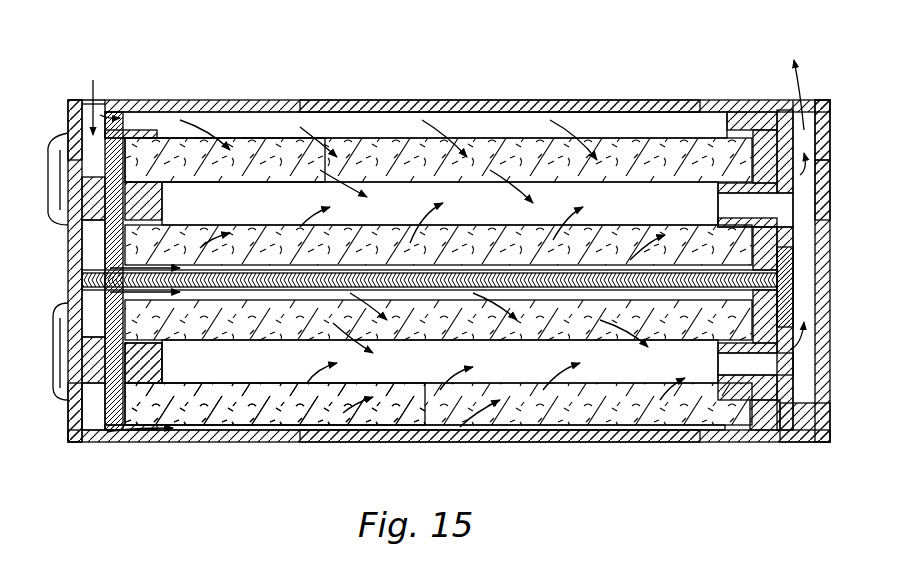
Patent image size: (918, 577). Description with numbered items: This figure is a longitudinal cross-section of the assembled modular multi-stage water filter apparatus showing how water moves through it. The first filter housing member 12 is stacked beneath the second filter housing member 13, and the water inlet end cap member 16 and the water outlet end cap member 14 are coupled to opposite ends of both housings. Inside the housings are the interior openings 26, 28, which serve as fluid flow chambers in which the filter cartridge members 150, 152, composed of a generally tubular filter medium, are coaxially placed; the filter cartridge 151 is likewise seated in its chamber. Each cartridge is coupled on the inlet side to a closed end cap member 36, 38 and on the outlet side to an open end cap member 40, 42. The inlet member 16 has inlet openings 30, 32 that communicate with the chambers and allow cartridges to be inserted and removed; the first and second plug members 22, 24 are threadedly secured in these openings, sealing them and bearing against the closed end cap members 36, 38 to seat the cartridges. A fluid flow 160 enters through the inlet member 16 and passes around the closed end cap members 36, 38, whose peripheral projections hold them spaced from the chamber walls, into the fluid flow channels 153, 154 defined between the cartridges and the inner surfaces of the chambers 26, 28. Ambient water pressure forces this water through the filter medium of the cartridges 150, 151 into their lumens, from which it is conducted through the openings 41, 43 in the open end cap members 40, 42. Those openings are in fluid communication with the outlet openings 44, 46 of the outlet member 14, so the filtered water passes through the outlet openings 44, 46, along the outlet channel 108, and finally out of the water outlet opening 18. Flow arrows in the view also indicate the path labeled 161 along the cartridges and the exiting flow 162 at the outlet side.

The first filter housing member 12 is at (718, 442).
The second filter housing member 13 is at (682, 100).
The water outlet end cap member 14 is at (830, 190).
The water inlet end cap member 16 is at (78, 100).
The water outlet opening 18 is at (813, 103).
The first plug member 22 is at (68, 118).
The second plug member 24 is at (68, 440).
The interior opening 26 is at (500, 432).
The interior opening 28 is at (398, 128).
The inlet opening 30 is at (72, 175).
The inlet opening 32 is at (84, 442).
The closed end cap member 36 is at (150, 130).
The closed end cap member 38 is at (167, 383).
The open end cap member 40 is at (770, 137).
The opening 41 is at (797, 163).
The open end cap member 42 is at (770, 427).
The opening 43 is at (793, 362).
The outlet opening 44 is at (800, 210).
The outlet opening 46 is at (813, 390).
The outlet channel 108 is at (800, 304).
The filter cartridge member 150 is at (600, 420).
The filter cartridge 151 is at (438, 404).
The filter cartridge member 152 is at (522, 150).
The fluid flow channel 153 is at (253, 127).
The fluid flow channel 154 is at (298, 430).
The fluid flow 160 is at (92, 106).
The flow path 161 is at (316, 130).
The outlet flow 162 is at (804, 127).